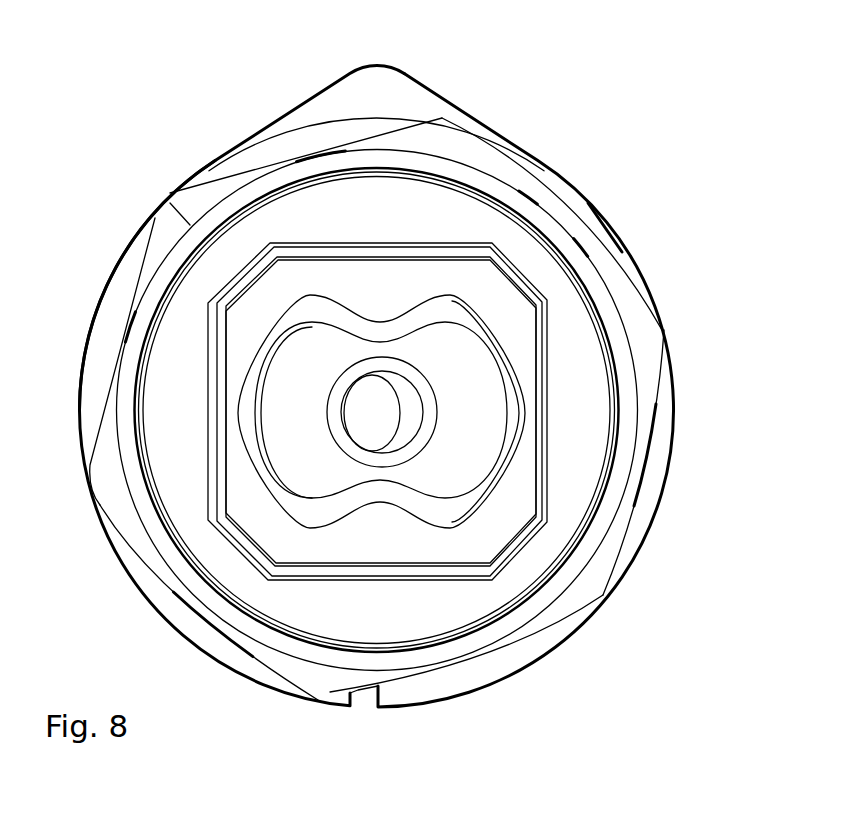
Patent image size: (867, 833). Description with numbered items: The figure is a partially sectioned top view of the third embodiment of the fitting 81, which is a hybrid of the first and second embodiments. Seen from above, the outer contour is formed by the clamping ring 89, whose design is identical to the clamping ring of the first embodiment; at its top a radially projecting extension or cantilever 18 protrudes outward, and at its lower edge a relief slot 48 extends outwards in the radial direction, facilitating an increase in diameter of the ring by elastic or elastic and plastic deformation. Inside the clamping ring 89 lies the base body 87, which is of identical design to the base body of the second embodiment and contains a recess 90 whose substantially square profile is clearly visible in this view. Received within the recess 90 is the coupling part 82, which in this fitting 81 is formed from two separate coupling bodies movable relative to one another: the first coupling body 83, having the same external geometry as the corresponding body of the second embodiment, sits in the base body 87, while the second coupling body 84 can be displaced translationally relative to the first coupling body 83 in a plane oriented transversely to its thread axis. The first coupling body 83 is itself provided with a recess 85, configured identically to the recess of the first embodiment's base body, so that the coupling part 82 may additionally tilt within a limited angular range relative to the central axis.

The cantilever 18 is at (371, 92).
The relief slot 48 is at (366, 714).
The fitting 81 is at (607, 134).
The coupling part 82 is at (276, 290).
The first coupling body 83 is at (507, 302).
The second coupling body 84 is at (462, 467).
The recess 85 is at (265, 492).
The base body 87 is at (460, 175).
The clamping ring 89 is at (103, 360).
The recess 90 is at (548, 412).